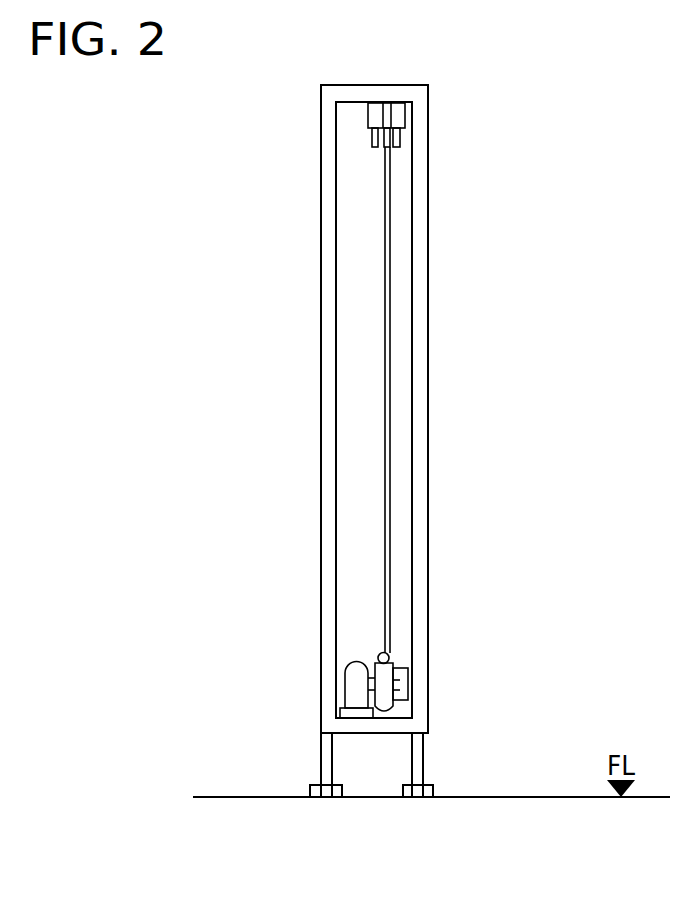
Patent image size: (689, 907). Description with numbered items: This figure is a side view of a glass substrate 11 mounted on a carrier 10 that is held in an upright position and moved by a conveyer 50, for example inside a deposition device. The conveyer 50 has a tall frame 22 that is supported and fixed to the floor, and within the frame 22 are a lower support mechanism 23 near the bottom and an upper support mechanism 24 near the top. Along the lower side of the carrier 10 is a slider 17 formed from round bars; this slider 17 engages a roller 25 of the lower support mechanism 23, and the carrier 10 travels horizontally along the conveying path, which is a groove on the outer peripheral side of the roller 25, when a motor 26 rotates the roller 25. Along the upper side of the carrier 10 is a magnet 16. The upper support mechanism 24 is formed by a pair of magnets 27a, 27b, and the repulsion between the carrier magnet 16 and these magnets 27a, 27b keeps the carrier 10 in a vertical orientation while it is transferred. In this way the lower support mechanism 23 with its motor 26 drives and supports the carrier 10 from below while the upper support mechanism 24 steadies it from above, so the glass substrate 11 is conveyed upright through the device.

The carrier 10 is at (387, 318).
The glass substrate 11 is at (390, 365).
The magnet 16 is at (388, 133).
The slider 17 is at (390, 655).
The frame 22 is at (428, 253).
The lower support mechanism 23 is at (383, 730).
The upper support mechanism 24 is at (375, 94).
The roller 25 is at (386, 681).
The motor 26 is at (354, 668).
The magnet 27a is at (372, 137).
The magnet 27b is at (400, 135).
The conveyer 50 is at (312, 342).